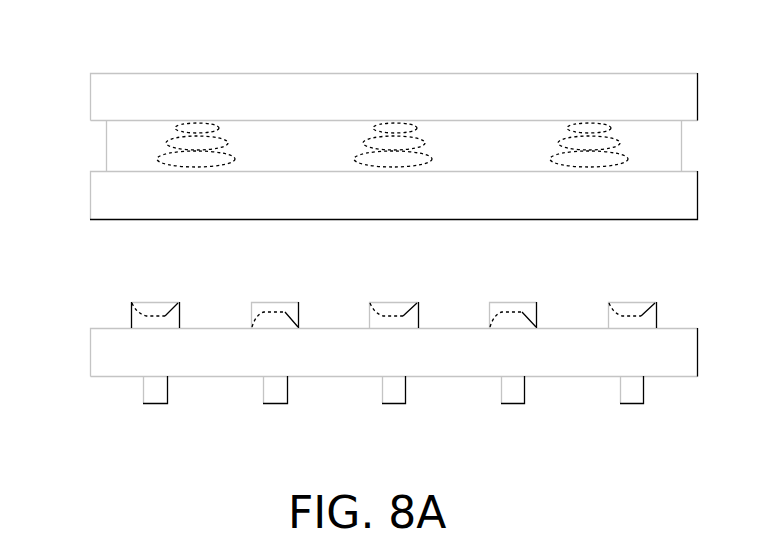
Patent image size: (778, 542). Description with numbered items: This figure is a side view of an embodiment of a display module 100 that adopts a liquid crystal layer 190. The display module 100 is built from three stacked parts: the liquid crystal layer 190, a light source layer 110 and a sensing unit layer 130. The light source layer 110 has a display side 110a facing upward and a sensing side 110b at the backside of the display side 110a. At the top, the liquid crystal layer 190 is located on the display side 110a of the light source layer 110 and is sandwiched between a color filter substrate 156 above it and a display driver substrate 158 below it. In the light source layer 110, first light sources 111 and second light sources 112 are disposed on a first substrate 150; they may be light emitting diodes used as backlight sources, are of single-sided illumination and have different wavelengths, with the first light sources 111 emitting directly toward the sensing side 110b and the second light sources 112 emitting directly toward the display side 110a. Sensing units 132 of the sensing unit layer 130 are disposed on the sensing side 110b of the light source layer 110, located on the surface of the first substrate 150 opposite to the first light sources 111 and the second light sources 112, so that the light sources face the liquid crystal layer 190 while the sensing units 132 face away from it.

The display module 100 is at (104, 36).
The color filter substrate 156 is at (103, 87).
The liquid crystal layer 190 is at (113, 131).
The display driver substrate 158 is at (108, 179).
The display side 110a is at (100, 243).
The light source layer 110 is at (78, 282).
The second light sources 112 is at (175, 317).
The first light sources 111 is at (290, 313).
The first substrate 150 is at (105, 341).
The sensing unit layer 130 is at (78, 382).
The sensing units 132 is at (157, 390).
The sensing side 110b is at (102, 462).